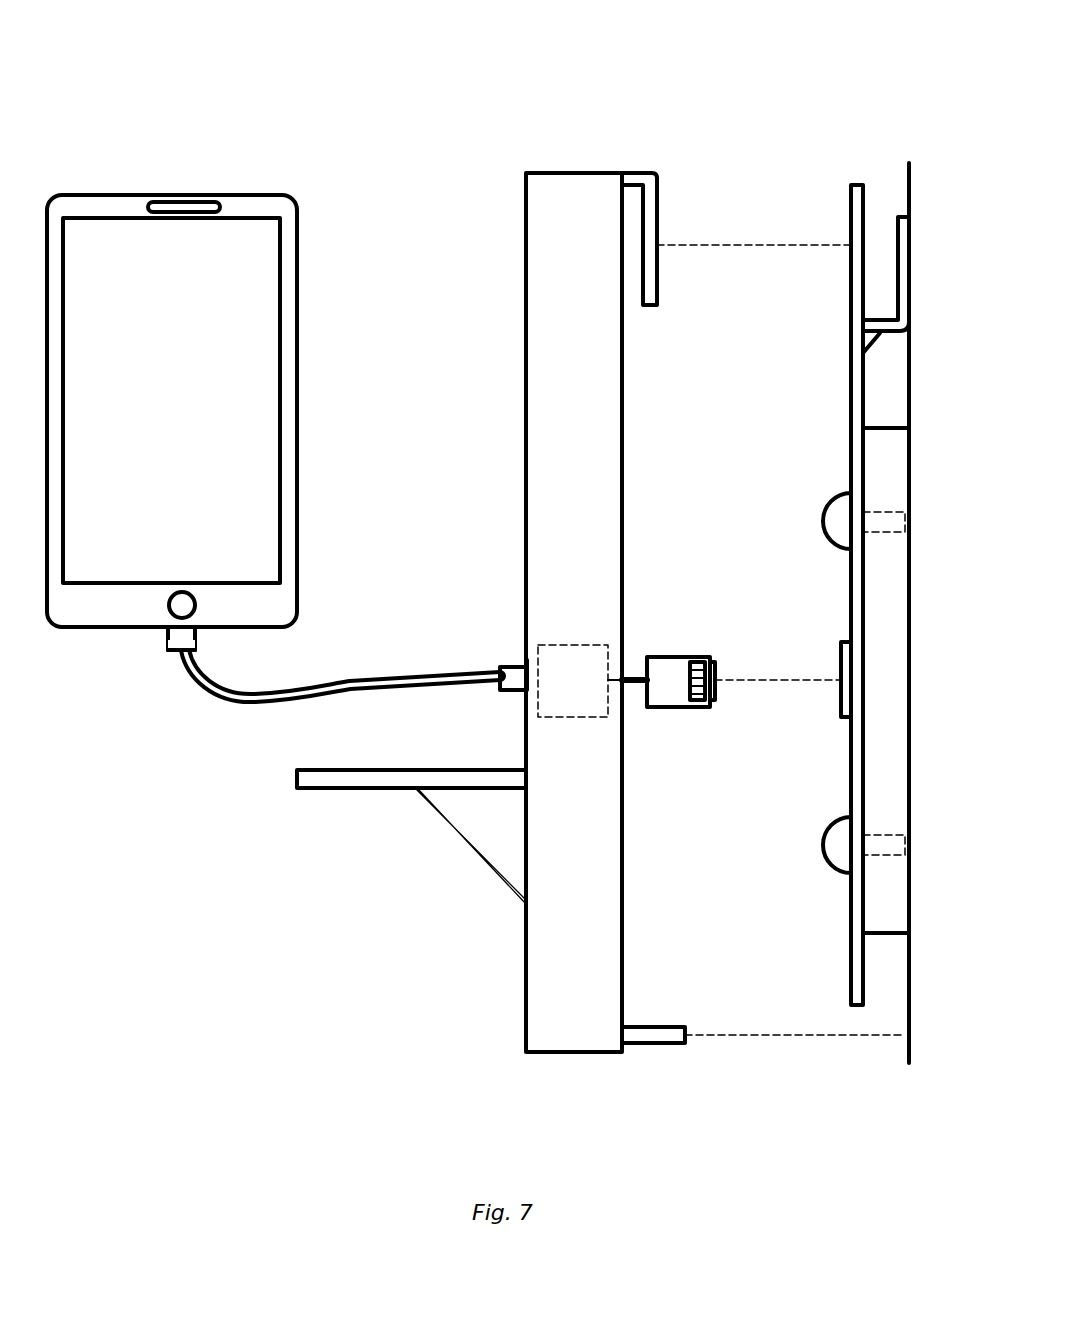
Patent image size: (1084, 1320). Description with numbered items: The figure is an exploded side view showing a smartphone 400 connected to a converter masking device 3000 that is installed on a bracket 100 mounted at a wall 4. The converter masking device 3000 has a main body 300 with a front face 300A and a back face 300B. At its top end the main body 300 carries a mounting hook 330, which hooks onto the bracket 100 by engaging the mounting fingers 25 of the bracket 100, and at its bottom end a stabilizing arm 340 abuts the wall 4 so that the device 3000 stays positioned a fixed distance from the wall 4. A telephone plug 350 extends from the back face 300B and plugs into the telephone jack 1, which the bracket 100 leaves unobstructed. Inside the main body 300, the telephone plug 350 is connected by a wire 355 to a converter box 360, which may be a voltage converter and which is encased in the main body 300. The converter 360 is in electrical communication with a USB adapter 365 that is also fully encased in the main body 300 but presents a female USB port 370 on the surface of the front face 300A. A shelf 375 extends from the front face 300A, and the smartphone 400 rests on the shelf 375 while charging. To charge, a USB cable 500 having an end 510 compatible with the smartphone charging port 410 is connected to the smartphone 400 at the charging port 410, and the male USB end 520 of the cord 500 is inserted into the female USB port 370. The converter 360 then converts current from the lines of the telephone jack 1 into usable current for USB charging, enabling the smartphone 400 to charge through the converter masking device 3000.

The converter masking device 3000 is at (473, 119).
The smartphone 400 is at (297, 473).
The smartphone charging port 410 is at (168, 630).
The USB cable 500 is at (396, 693).
The end compatible with smart phone charging port 510 is at (196, 634).
The male USB end 520 is at (500, 668).
The main body 300 is at (526, 922).
The front face 300A is at (526, 328).
The back face 300B is at (622, 935).
The mounting hook 330 is at (658, 183).
The stabilizing arm 340 is at (636, 1027).
The shelf 375 is at (335, 790).
The converter box 360 is at (570, 645).
The USB adapter 365 is at (527, 662).
The female USB port 370 is at (527, 664).
The wire 355 is at (632, 672).
The telephone plug 350 is at (678, 710).
The bracket 100 is at (856, 1050).
The wall 4 is at (955, 470).
The mounting fingers 25 is at (863, 203).
The telephone jack 1 is at (841, 660).